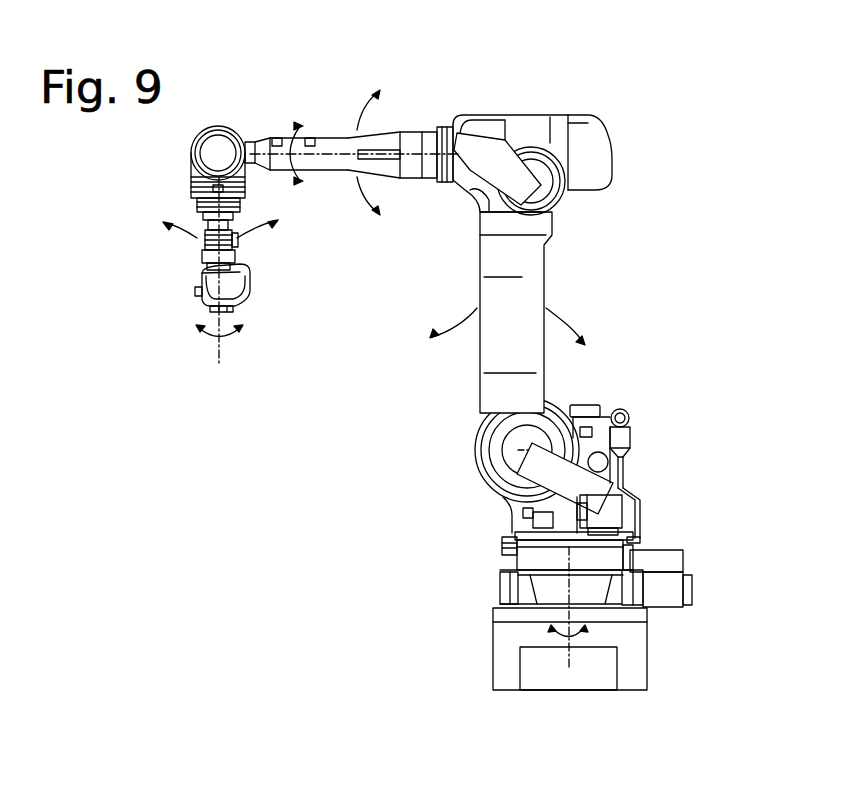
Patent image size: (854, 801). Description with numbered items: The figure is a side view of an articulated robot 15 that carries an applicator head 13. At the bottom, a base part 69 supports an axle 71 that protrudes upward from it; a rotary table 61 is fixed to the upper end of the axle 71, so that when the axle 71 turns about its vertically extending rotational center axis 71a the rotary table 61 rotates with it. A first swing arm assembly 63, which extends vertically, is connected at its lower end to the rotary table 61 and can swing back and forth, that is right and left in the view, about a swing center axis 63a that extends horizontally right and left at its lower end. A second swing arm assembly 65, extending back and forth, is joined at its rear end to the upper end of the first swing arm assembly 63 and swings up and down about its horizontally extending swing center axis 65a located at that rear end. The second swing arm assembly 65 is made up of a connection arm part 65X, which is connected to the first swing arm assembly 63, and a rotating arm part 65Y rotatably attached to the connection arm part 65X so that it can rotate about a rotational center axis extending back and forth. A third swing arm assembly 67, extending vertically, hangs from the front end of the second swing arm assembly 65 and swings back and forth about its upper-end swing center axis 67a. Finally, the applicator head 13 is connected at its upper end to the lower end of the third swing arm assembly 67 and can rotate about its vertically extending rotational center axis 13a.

The applicator head 13 is at (200, 257).
The rotational center axis 13a is at (220, 350).
The articulated robot 15 is at (605, 115).
The rotary table 61 is at (503, 550).
The first swing arm assembly 63 is at (532, 278).
The swing center axis 63a is at (527, 450).
The second swing arm assembly 65 is at (485, 110).
The connection arm part 65X is at (537, 116).
The rotating arm part 65Y is at (340, 232).
The swing center axis 65a is at (538, 186).
The third swing arm assembly 67 is at (193, 180).
The swing center axis 67a is at (218, 150).
The base part 69 is at (640, 642).
The axle 71 is at (537, 594).
The rotational center axis 71a is at (569, 655).